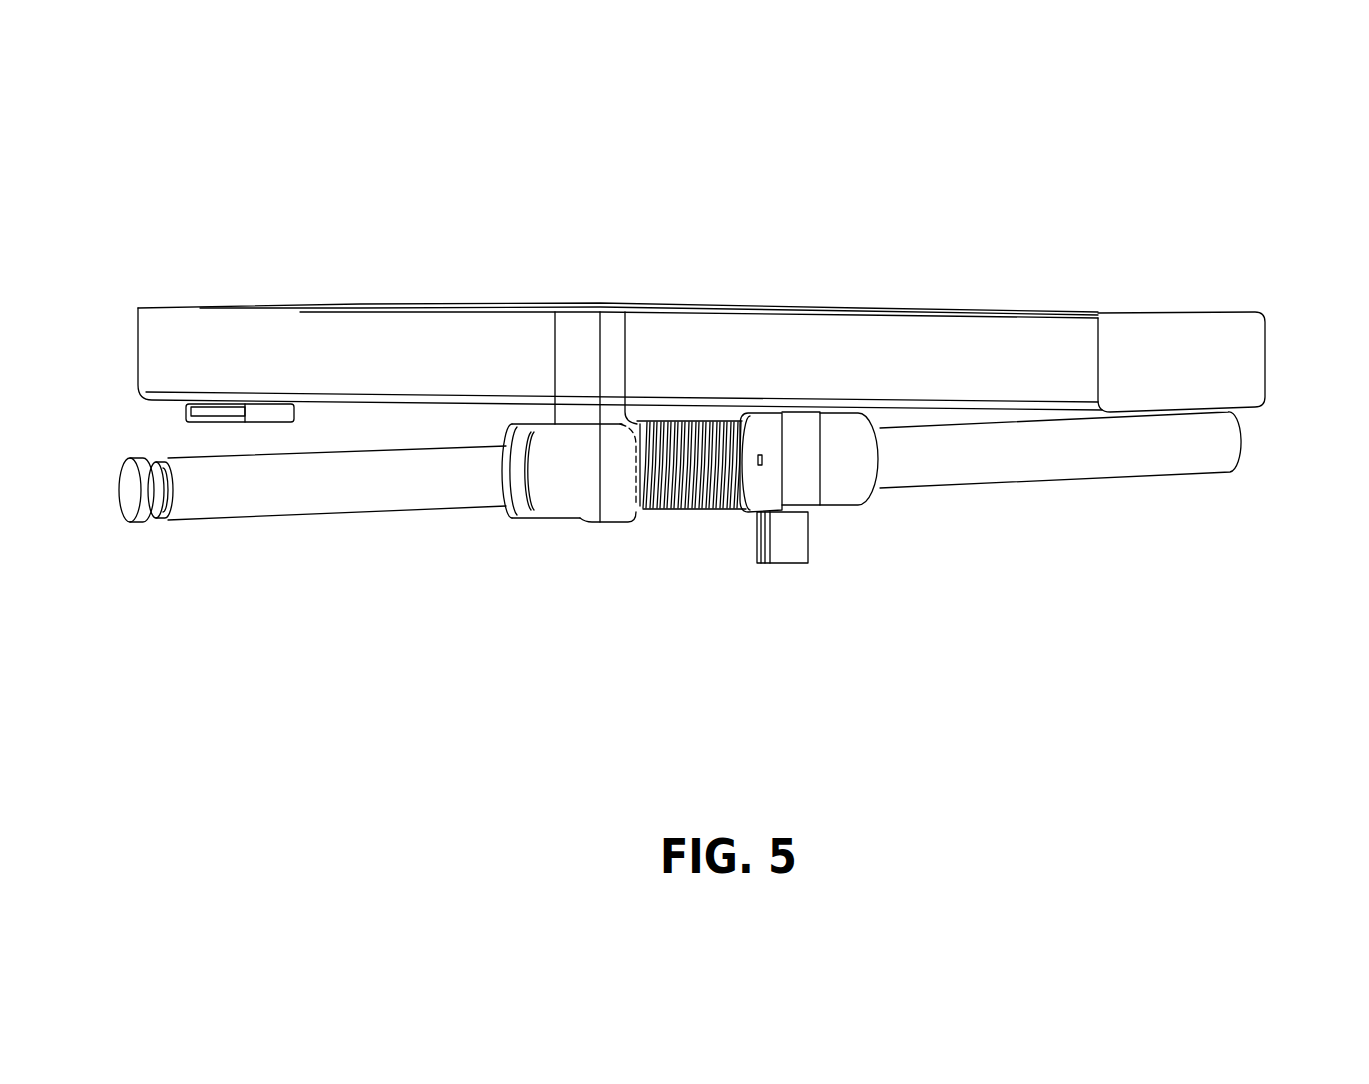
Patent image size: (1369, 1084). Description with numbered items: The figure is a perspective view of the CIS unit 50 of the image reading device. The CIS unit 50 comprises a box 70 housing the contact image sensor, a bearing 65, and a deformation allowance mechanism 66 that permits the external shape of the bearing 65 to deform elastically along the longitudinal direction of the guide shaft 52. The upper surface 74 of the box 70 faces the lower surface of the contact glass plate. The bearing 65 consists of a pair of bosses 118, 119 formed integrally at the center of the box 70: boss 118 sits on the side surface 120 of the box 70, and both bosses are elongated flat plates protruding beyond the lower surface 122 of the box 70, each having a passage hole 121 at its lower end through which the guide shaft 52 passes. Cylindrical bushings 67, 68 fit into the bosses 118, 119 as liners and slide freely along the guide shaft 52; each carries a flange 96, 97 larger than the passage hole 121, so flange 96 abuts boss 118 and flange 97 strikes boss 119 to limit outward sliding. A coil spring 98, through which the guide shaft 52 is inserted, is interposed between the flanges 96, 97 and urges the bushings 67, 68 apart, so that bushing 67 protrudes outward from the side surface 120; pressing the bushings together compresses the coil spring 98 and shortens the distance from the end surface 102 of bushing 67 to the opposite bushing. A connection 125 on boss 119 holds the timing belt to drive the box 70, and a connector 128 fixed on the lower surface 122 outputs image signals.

The CIS unit 50 is at (1060, 182).
The guide shaft 52 is at (225, 498).
The bearing 65 is at (591, 569).
The deformation allowance mechanism 66 is at (705, 520).
The bushing 67 is at (553, 516).
The bushing 68 is at (865, 460).
The box 70 is at (1243, 357).
The surface 74 is at (876, 304).
The flange 96 is at (645, 518).
The flange 97 is at (772, 495).
The coil spring 98 is at (708, 423).
The end surface 102 is at (508, 497).
The boss 118 is at (615, 345).
The boss 119 is at (803, 457).
The side surface 120 is at (398, 329).
The passage hole 121 is at (585, 458).
The lower surface 122 is at (388, 403).
The connection 125 is at (792, 553).
The connector 128 is at (195, 422).